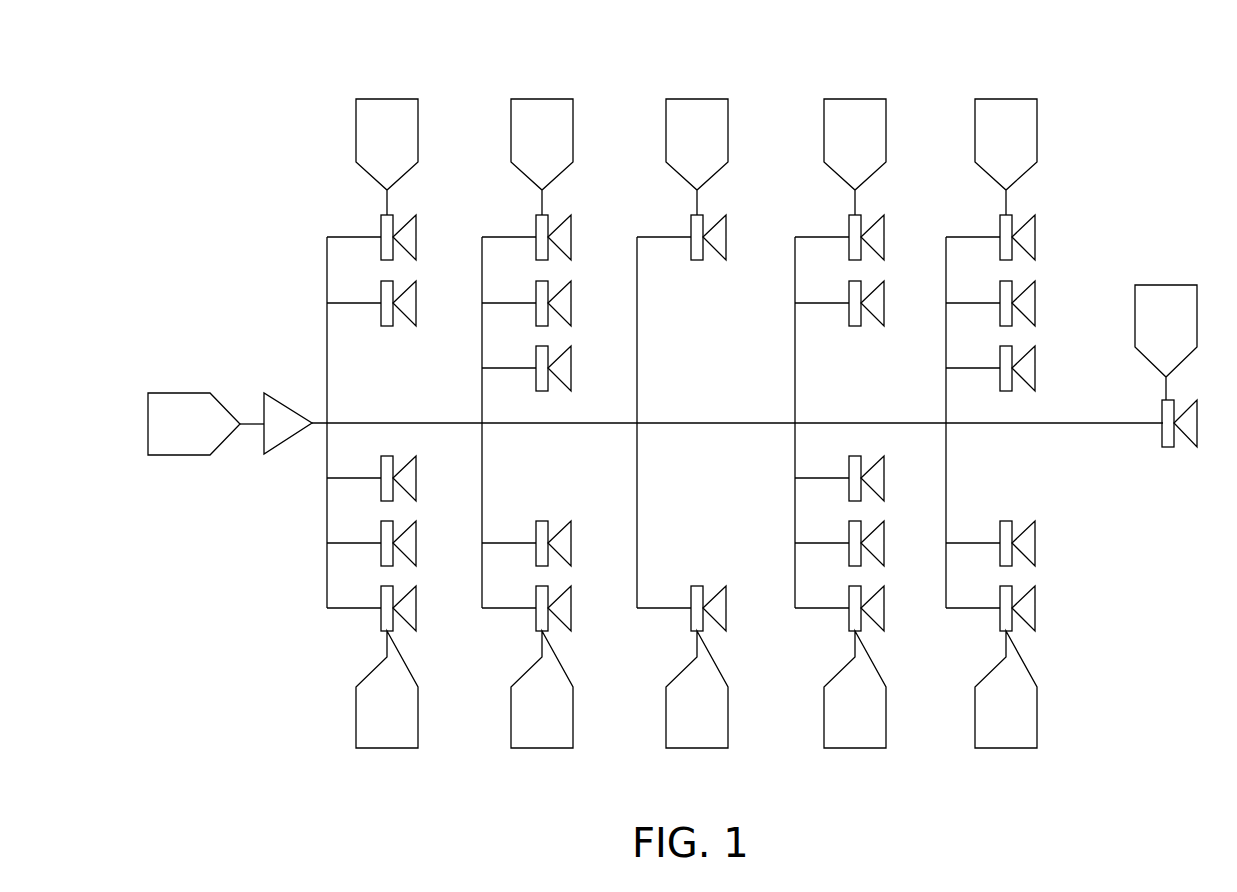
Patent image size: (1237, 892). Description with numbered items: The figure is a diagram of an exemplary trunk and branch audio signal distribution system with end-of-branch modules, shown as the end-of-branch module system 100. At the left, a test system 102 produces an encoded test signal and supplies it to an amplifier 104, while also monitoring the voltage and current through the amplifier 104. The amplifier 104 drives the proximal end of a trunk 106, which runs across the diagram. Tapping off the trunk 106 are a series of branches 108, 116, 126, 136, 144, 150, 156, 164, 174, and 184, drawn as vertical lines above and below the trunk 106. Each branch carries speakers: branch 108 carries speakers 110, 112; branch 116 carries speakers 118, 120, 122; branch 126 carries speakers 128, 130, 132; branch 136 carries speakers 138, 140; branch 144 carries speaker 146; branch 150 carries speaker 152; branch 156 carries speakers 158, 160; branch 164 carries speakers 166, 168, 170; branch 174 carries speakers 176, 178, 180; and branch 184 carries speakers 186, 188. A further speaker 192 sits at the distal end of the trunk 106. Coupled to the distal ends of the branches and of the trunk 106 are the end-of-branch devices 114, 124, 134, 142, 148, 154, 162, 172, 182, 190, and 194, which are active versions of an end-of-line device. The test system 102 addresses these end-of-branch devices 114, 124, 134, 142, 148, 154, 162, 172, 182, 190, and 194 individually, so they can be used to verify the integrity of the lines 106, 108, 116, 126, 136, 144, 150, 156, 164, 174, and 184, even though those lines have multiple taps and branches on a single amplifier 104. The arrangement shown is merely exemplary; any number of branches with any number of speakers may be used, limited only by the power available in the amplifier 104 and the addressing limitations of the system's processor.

The end-of-branch module system 100 is at (236, 76).
The test system 102 is at (193, 400).
The amplifier 104 is at (292, 420).
The trunk 106 is at (408, 422).
The branch 108 is at (327, 345).
The speaker 110 is at (410, 318).
The speaker 112 is at (410, 250).
The end-of-branch device 114 is at (363, 142).
The branch 116 is at (327, 497).
The speaker 118 is at (410, 466).
The speaker 120 is at (408, 540).
The speaker 122 is at (408, 605).
The end-of-branch device 124 is at (390, 743).
The branch 126 is at (482, 405).
The speaker 128 is at (565, 383).
The speaker 130 is at (565, 312).
The speaker 132 is at (565, 250).
The end-of-branch device 134 is at (520, 142).
The branch 136 is at (482, 465).
The speaker 138 is at (565, 535).
The speaker 140 is at (565, 605).
The end-of-branch device 142 is at (545, 743).
The branch 144 is at (637, 405).
The speaker 146 is at (718, 248).
The end-of-branch device 148 is at (676, 142).
The branch 150 is at (637, 465).
The speaker 152 is at (720, 605).
The end-of-branch device 154 is at (700, 743).
The branch 156 is at (795, 400).
The speaker 158 is at (878, 318).
The speaker 160 is at (878, 250).
The end-of-branch device 162 is at (833, 142).
The branch 164 is at (795, 467).
The speaker 166 is at (878, 468).
The speaker 168 is at (878, 535).
The speaker 170 is at (878, 605).
The end-of-branch device 172 is at (858, 743).
The branch 174 is at (946, 402).
The speaker 176 is at (1029, 383).
The speaker 178 is at (1029, 318).
The speaker 180 is at (1029, 250).
The end-of-branch device 182 is at (988, 142).
The branch 184 is at (946, 475).
The speaker 186 is at (1028, 533).
The speaker 188 is at (1030, 610).
The end-of-branch device 190 is at (1012, 743).
The speaker 192 is at (1192, 430).
The end-of-branch device 194 is at (1168, 292).